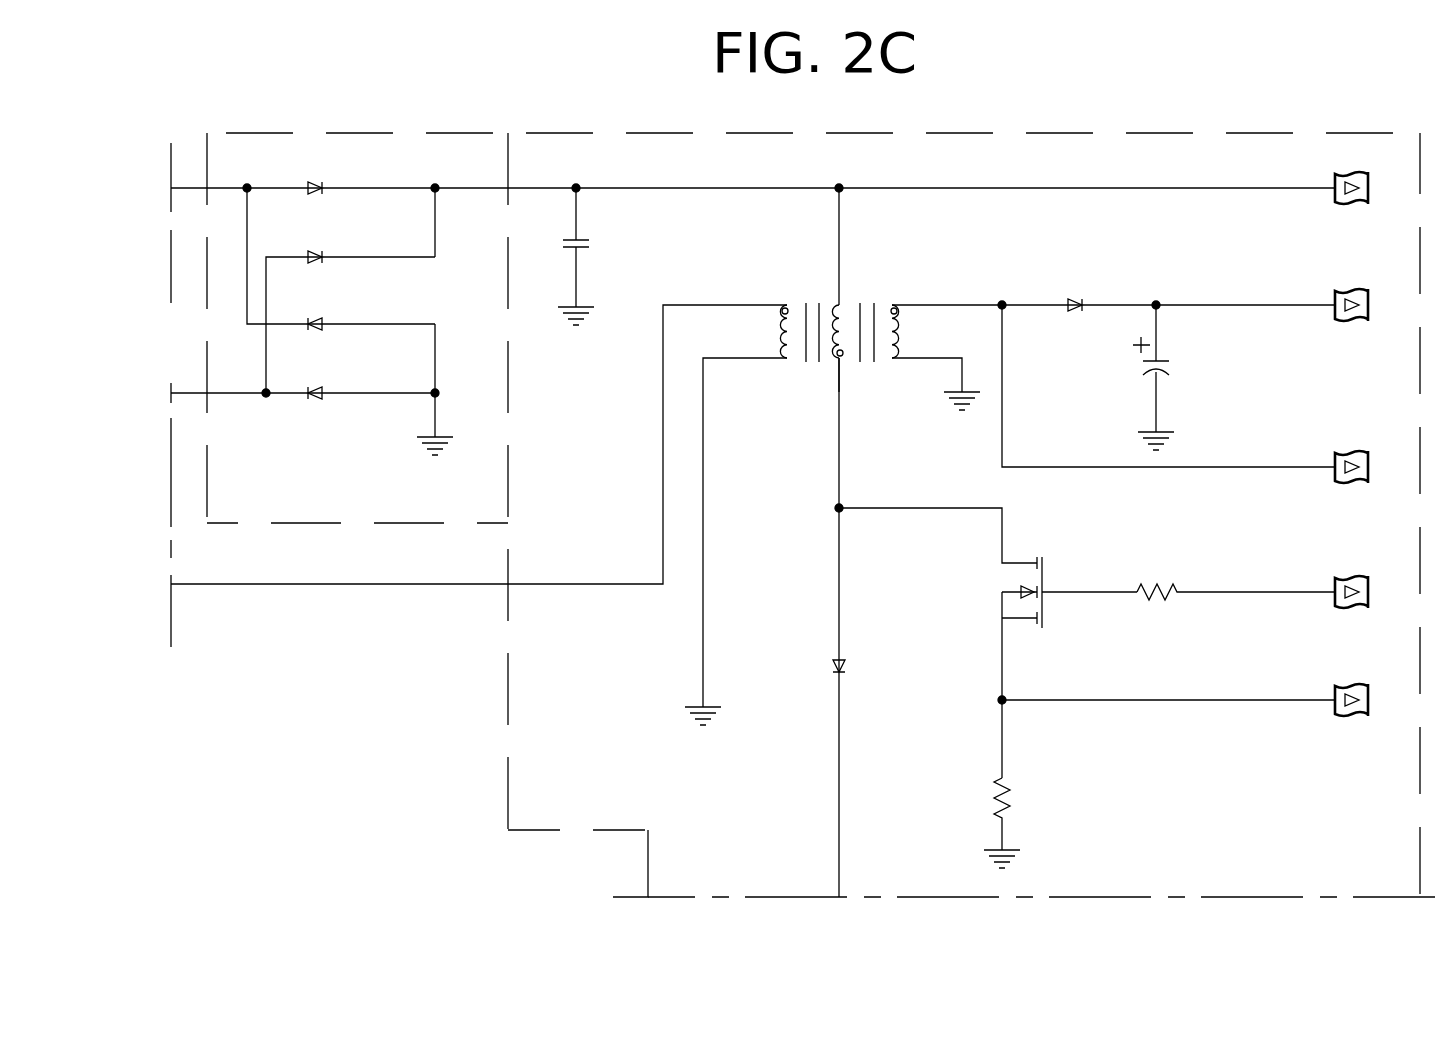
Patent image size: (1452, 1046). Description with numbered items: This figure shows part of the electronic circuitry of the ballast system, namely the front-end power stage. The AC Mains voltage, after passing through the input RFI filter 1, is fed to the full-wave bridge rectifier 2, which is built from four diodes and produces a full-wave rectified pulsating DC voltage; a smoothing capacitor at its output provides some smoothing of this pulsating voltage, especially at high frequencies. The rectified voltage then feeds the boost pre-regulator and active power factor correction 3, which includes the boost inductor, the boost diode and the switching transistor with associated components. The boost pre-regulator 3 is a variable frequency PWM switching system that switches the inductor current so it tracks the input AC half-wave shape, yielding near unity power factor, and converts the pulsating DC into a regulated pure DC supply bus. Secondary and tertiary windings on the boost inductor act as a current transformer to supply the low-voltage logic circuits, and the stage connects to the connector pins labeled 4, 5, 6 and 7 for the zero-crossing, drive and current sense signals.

The full-wave bridge rectifier 2 is at (386, 132).
The boost pre-regulator and active power factor correction 3 is at (507, 693).
The input RFI filter 1 is at (1257, 197).
The connector J1 pin 4 (ZC OUT) 4 is at (1302, 477).
The transformer L2 pin 5 is at (850, 376).
The connector J1 pin 6 (DRIVE) 6 is at (1304, 601).
The connector J1 pin 7 (IL OUT) 7 is at (1304, 712).